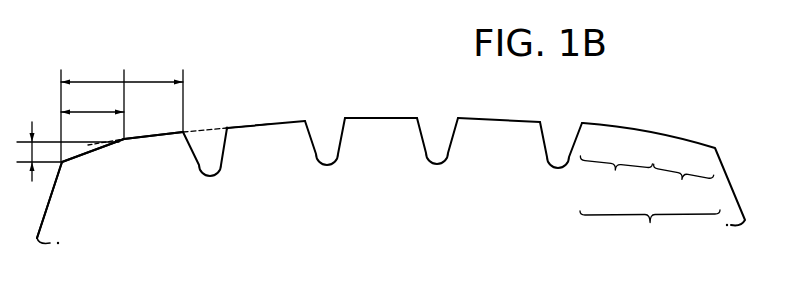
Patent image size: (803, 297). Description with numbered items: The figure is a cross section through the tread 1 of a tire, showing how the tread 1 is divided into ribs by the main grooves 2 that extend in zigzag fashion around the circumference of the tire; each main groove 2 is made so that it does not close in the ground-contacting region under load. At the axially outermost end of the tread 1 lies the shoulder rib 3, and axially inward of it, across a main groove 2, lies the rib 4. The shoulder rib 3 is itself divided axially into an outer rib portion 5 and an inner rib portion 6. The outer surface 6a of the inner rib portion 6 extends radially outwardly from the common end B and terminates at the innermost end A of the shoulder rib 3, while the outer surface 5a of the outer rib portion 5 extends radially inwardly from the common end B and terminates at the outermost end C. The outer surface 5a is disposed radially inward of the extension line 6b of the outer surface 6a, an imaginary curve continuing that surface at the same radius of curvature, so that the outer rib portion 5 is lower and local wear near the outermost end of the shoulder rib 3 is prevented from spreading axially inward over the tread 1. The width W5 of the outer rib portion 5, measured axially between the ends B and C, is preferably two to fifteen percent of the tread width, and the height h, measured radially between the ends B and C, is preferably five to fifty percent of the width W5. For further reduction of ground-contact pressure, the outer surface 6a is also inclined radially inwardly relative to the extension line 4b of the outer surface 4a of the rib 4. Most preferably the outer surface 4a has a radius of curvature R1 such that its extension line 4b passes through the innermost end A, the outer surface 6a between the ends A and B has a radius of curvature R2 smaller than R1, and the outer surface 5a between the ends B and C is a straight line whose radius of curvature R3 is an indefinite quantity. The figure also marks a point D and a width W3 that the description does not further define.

The tread 1 is at (623, 113).
The main groove 2 is at (212, 172).
The shoulder rib 3 is at (650, 227).
The rib 4 is at (378, 125).
The outer surface of the rib 4a is at (260, 123).
The extension line of the outer surface of the rib 4b is at (153, 133).
The outer rib portion 5 is at (684, 184).
The outer surface of the outer rib portion 5a is at (66, 163).
The inner rib portion 6 is at (616, 175).
The outer surface of the inner rib portion 6a is at (136, 137).
The extension line of the outer surface of the inner rib portion 6b is at (93, 152).
The point D is at (227, 126).
The innermost end of the shoulder rib A is at (182, 88).
The common end B is at (124, 92).
The outermost end of the shoulder rib C is at (59, 103).
The width W3 is at (122, 74).
The width of the outer rib portion W5 is at (92, 104).
The height h is at (68, 151).
The radius of curvature of the outer surface of the rib R1 is at (268, 124).
The radius of curvature of the outer surface of the inner rib portion R2 is at (153, 135).
The radius of curvature of the outer surface of the outer rib portion R3 is at (88, 152).